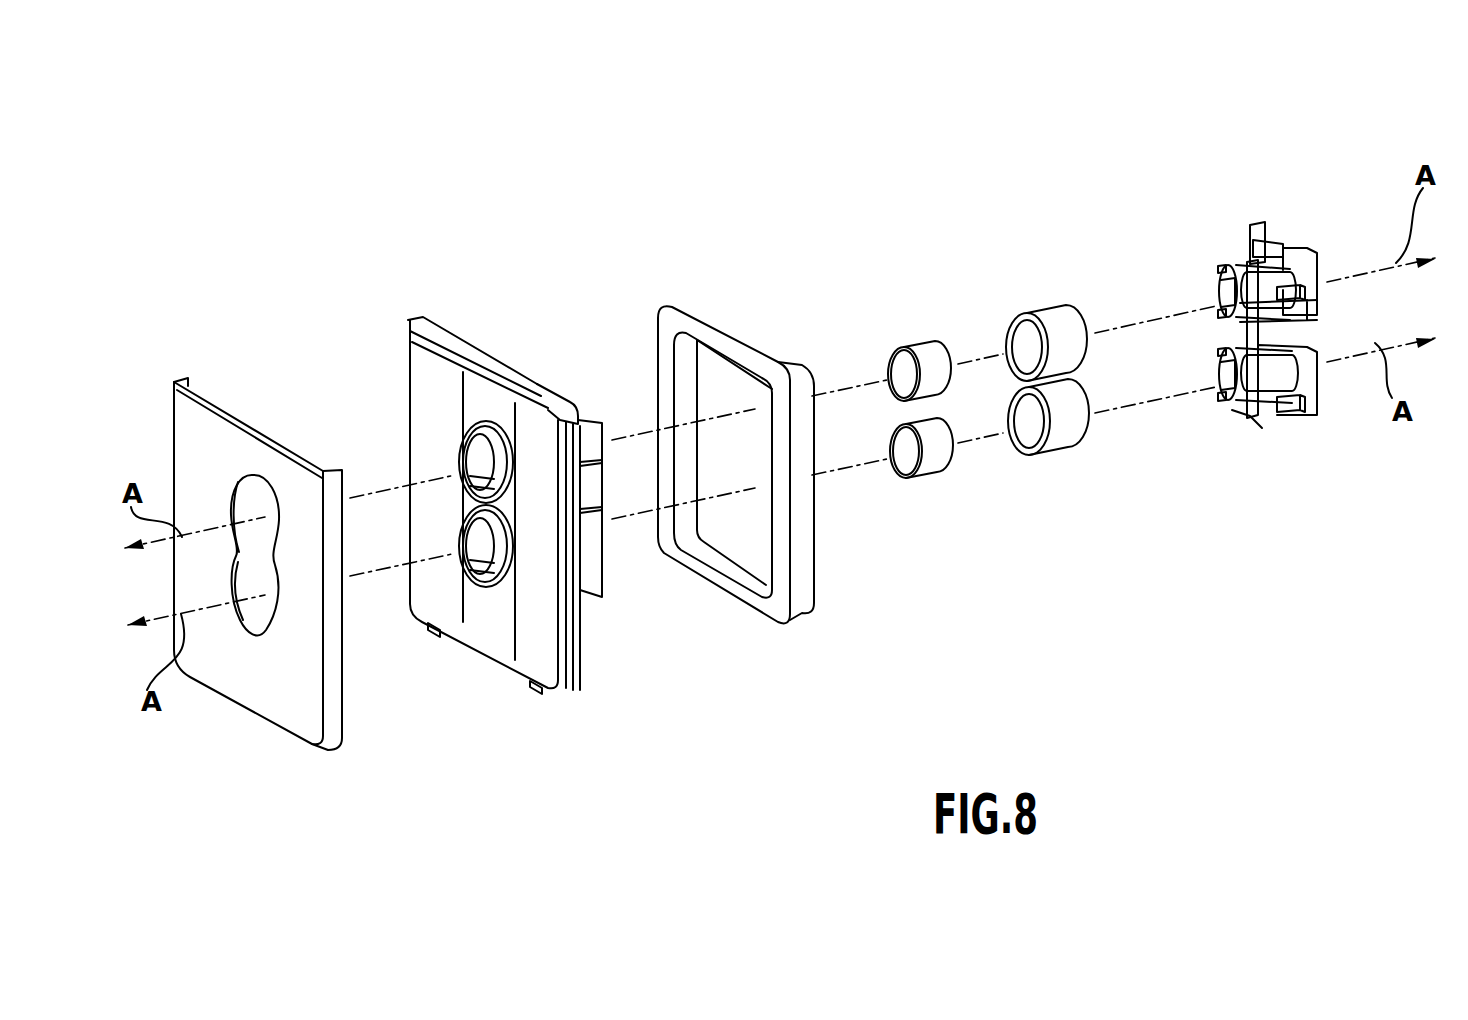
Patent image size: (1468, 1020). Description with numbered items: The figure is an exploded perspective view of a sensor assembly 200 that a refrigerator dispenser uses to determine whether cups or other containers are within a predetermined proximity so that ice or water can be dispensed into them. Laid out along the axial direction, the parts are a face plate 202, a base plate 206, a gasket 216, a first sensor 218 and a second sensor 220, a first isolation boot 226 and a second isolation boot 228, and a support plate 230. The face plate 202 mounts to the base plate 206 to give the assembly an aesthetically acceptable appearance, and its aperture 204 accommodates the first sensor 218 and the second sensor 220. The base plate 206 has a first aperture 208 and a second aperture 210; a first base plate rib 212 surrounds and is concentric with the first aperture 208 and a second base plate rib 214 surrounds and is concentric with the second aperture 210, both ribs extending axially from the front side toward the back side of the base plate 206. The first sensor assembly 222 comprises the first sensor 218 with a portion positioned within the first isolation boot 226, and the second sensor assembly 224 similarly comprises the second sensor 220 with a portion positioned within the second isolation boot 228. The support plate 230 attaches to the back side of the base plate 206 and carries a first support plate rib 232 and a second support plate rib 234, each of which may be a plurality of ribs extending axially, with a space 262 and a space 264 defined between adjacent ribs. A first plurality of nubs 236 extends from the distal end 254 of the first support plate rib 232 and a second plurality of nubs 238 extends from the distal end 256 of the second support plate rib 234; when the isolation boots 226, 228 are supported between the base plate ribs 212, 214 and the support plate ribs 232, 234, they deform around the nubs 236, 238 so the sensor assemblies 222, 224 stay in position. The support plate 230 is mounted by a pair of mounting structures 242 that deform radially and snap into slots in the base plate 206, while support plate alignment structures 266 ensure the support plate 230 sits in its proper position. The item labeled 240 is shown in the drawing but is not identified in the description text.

The sensor assembly 200 is at (310, 195).
The face plate 202 is at (242, 527).
The aperture 204 is at (240, 486).
The base plate 206 is at (463, 456).
The first aperture 208 is at (419, 423).
The second aperture 210 is at (436, 607).
The first base plate rib 212 is at (467, 460).
The second base plate rib 214 is at (497, 580).
The gasket 216 is at (663, 332).
The first sensor 218 is at (894, 363).
The second sensor 220 is at (904, 460).
The first sensor assembly 222 is at (890, 386).
The second sensor assembly 224 is at (1041, 428).
The first isolation boot 226 is at (1050, 312).
The second isolation boot 228 is at (1065, 442).
The support plate 230 is at (1259, 336).
The first support plate rib 232 is at (1246, 272).
The second support plate rib 234 is at (1261, 402).
The first plurality of nubs 236 is at (1233, 279).
The second plurality of nubs 238 is at (1228, 375).
The rear bracket 240 is at (1335, 308).
The mounting structures 242 is at (1260, 252).
The distal end 254 is at (1228, 293).
The distal end 256 is at (1223, 353).
The space 262 is at (1212, 323).
The space 264 is at (1230, 419).
The support plate alignment structures 266 is at (1296, 290).